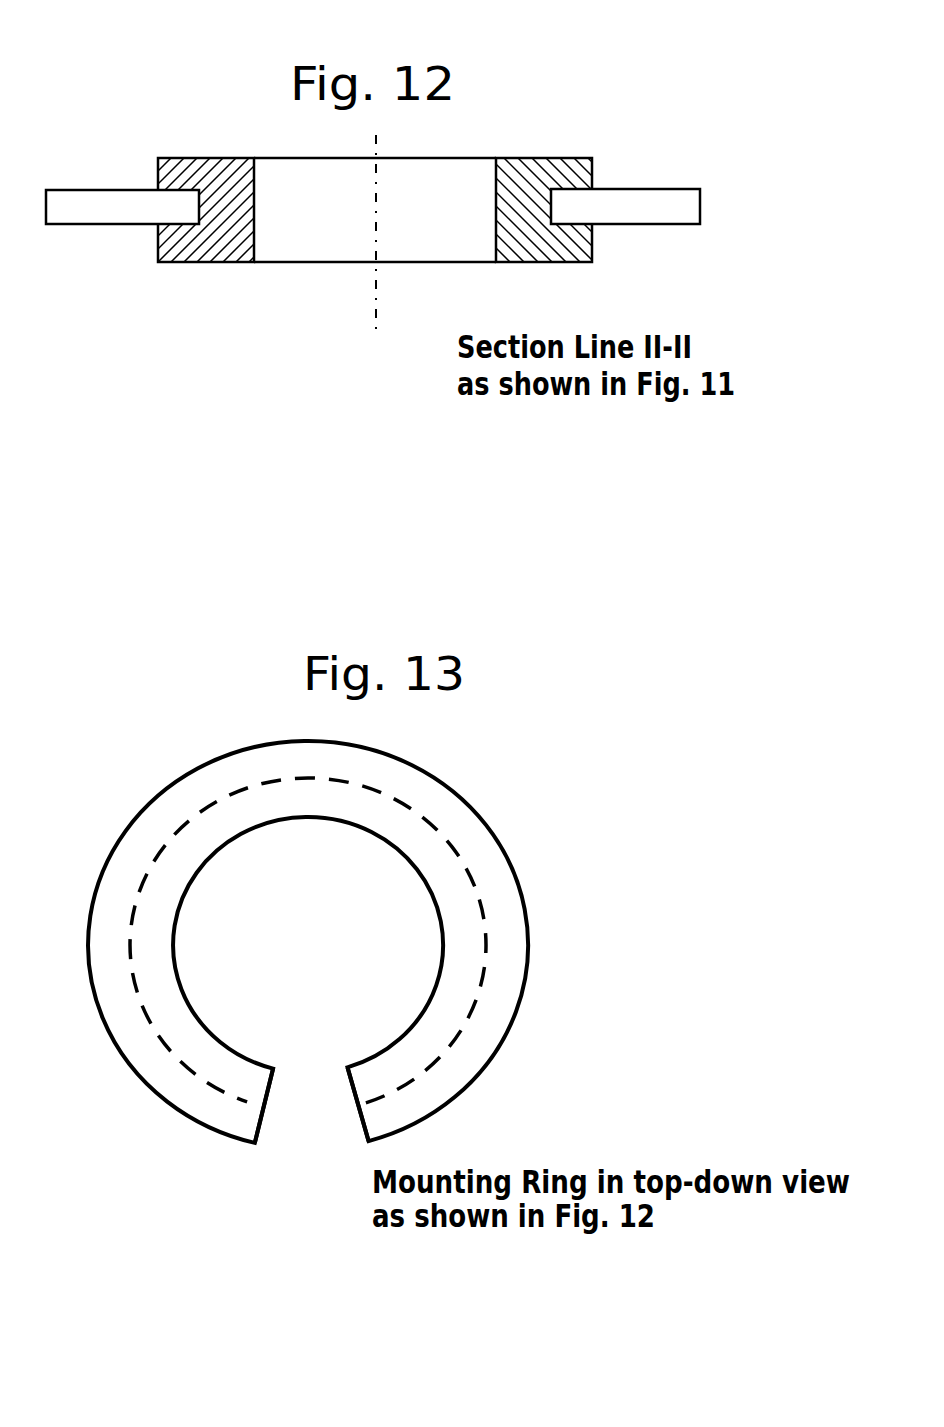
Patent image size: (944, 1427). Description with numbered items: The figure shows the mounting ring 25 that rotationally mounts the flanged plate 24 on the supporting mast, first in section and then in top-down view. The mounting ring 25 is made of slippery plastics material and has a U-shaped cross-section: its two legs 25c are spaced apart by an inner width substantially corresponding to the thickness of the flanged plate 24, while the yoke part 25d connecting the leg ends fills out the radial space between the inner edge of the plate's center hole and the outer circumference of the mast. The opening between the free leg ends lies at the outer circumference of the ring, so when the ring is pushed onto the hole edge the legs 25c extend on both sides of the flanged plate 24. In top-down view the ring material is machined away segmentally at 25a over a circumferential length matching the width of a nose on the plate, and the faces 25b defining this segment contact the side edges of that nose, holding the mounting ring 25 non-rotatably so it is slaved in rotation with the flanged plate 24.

In FIG. 12, the flanged plate 24 is at (101, 212).
In FIG. 12, the mounting ring 25 is at (377, 197).
In FIG. 13, the mounting ring 25 is at (478, 810).
In FIG. 13, the machined away segment 25a is at (309, 1105).
In FIG. 13, the faces of the mounting ring 25b is at (352, 1093).
In FIG. 12, the legs of the mounting ring 25c is at (578, 173).
In FIG. 12, the yoke part 25d is at (232, 218).